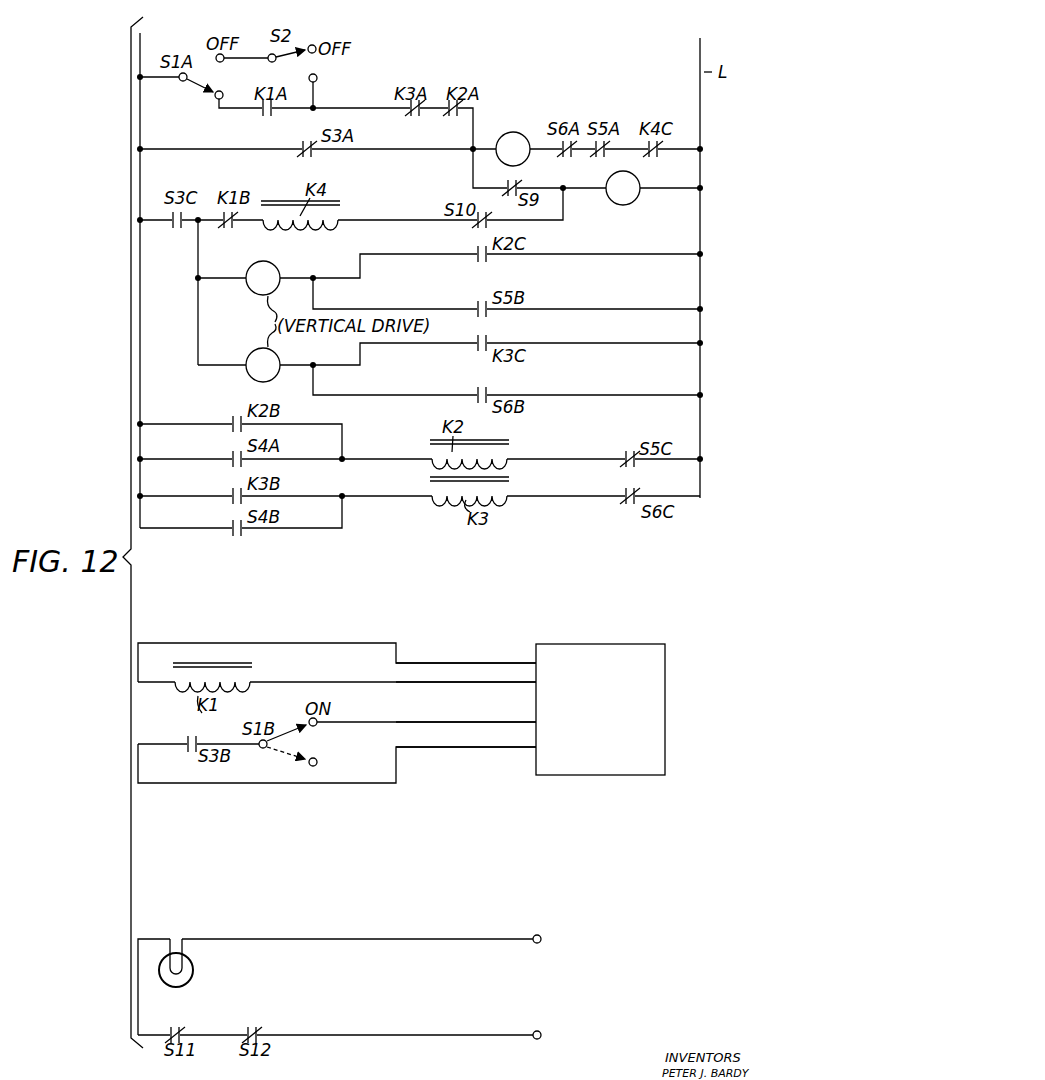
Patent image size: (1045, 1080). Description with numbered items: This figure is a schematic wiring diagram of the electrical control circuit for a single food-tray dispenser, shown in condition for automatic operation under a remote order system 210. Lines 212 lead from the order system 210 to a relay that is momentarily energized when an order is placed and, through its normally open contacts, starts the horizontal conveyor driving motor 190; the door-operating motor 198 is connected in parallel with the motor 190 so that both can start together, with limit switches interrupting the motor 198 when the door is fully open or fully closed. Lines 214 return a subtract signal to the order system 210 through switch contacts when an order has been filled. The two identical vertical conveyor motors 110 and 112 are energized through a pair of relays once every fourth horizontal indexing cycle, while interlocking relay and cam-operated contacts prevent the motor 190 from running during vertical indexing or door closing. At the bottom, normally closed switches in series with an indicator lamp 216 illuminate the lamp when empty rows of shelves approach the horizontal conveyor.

The electric motor 110 is at (251, 270).
The electric motor 112 is at (251, 357).
The horizontal conveyor driving motor 190 is at (513, 131).
The door-operating motor 198 is at (617, 204).
The order system 210 is at (670, 670).
The lines 212 is at (458, 688).
The lines 214 is at (458, 722).
The indicator lamp 216 is at (194, 972).